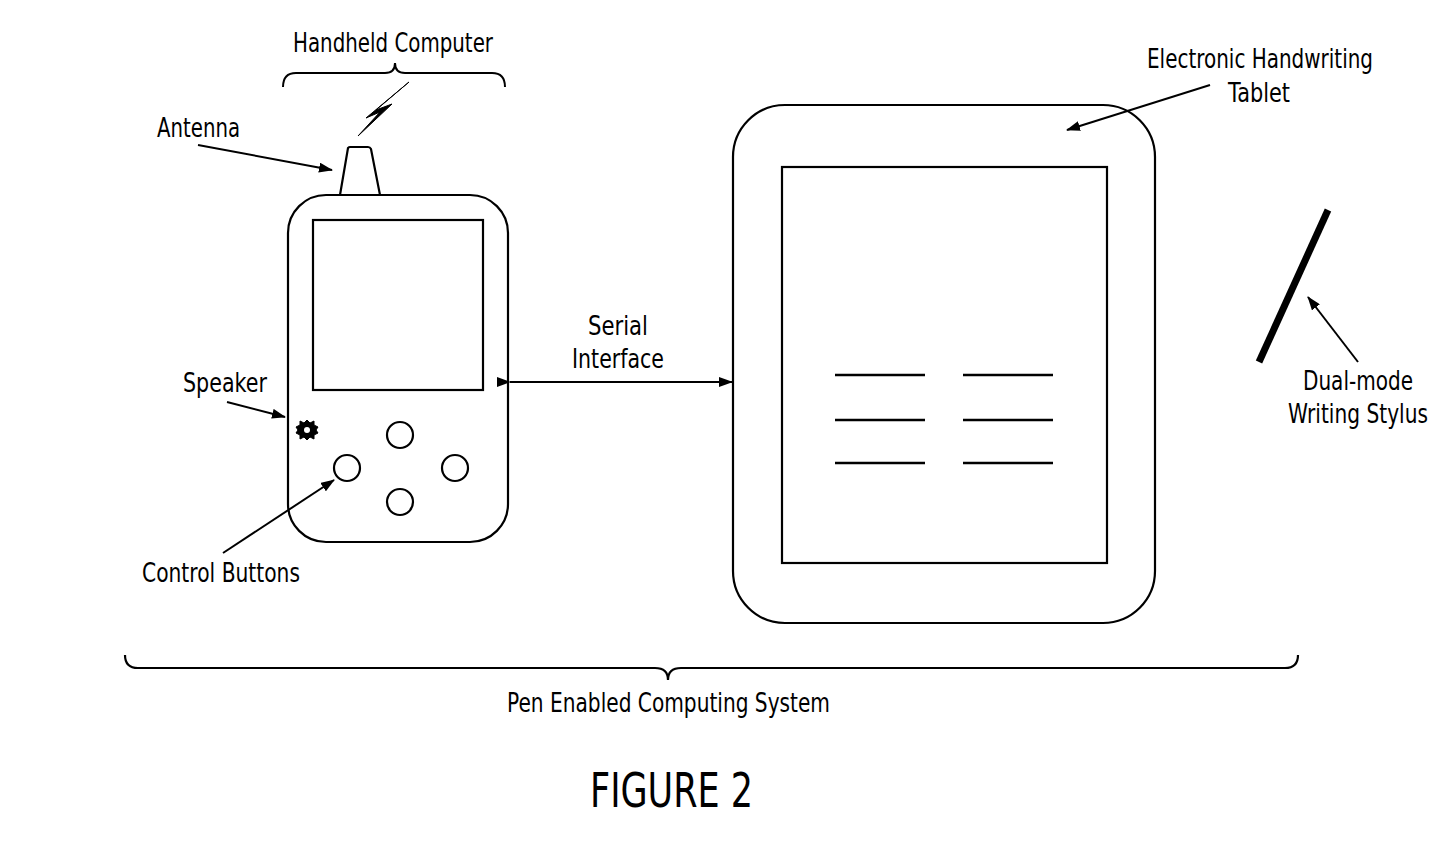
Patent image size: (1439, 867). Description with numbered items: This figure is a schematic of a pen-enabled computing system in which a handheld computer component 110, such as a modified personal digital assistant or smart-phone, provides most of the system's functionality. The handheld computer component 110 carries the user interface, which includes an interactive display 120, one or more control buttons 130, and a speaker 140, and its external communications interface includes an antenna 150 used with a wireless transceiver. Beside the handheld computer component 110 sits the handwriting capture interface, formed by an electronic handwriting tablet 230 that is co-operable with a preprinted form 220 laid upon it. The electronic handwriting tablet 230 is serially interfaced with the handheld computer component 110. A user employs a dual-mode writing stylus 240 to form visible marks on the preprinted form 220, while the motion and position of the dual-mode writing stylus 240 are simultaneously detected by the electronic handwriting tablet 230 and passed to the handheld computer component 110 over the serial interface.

The handheld computer component 110 is at (509, 258).
The interactive display 120 is at (445, 220).
The control buttons 130 is at (455, 481).
The speaker 140 is at (300, 428).
The antenna 150 is at (380, 177).
The preprinted form 220 is at (1093, 473).
The electronic handwriting tablet 230 is at (853, 127).
The dual-mode writing stylus 240 is at (1295, 278).